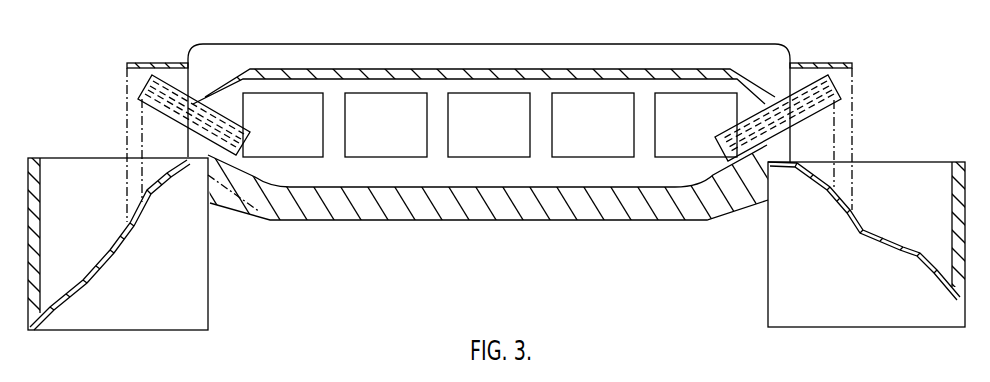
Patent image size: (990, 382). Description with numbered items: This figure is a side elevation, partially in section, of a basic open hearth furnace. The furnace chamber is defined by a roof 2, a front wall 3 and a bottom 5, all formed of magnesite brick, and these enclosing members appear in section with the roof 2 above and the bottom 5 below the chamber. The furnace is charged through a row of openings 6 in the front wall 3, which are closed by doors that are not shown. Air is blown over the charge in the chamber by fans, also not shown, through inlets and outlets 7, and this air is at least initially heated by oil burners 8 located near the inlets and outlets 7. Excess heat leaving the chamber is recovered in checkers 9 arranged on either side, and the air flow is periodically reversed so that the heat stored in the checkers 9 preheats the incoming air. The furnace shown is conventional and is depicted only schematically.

The roof 2 is at (497, 77).
The front wall 3 is at (643, 88).
The bottom 5 is at (439, 212).
The openings 6 is at (510, 147).
The inlets and outlets 7 is at (202, 143).
The oil burners 8 is at (172, 93).
The checkers 9 is at (47, 228).